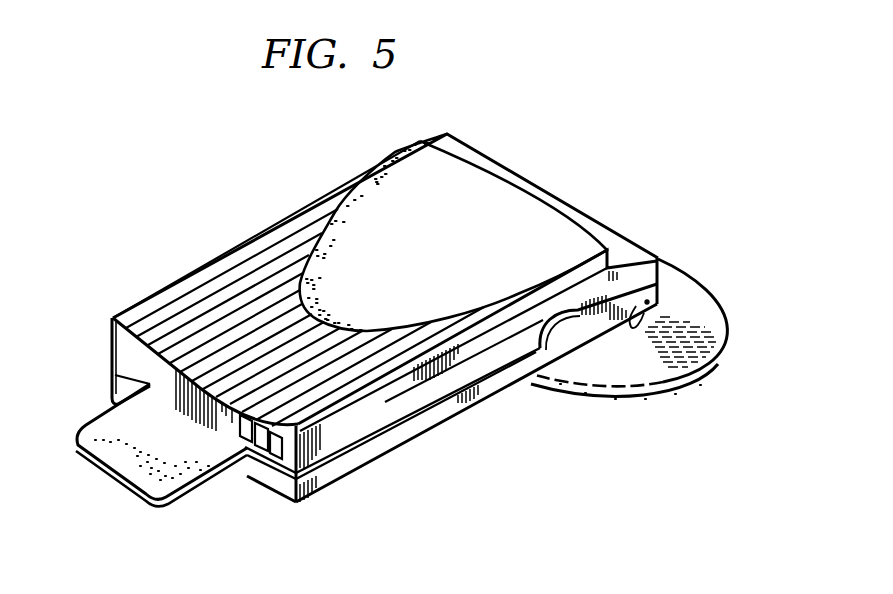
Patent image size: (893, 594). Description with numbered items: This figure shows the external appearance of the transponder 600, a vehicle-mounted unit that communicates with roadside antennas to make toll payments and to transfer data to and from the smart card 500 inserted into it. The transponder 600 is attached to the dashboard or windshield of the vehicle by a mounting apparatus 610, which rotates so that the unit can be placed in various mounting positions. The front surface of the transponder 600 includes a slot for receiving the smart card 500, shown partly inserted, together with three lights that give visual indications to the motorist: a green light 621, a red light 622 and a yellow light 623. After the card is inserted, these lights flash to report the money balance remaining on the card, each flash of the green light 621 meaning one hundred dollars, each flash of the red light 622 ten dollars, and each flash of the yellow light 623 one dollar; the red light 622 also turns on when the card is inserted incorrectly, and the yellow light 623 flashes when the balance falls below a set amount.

The smart card 500 is at (103, 423).
The transponder 600 is at (263, 227).
The mounting apparatus 610 is at (704, 292).
The green light 621 is at (244, 440).
The red light 622 is at (260, 449).
The yellow light 623 is at (277, 457).